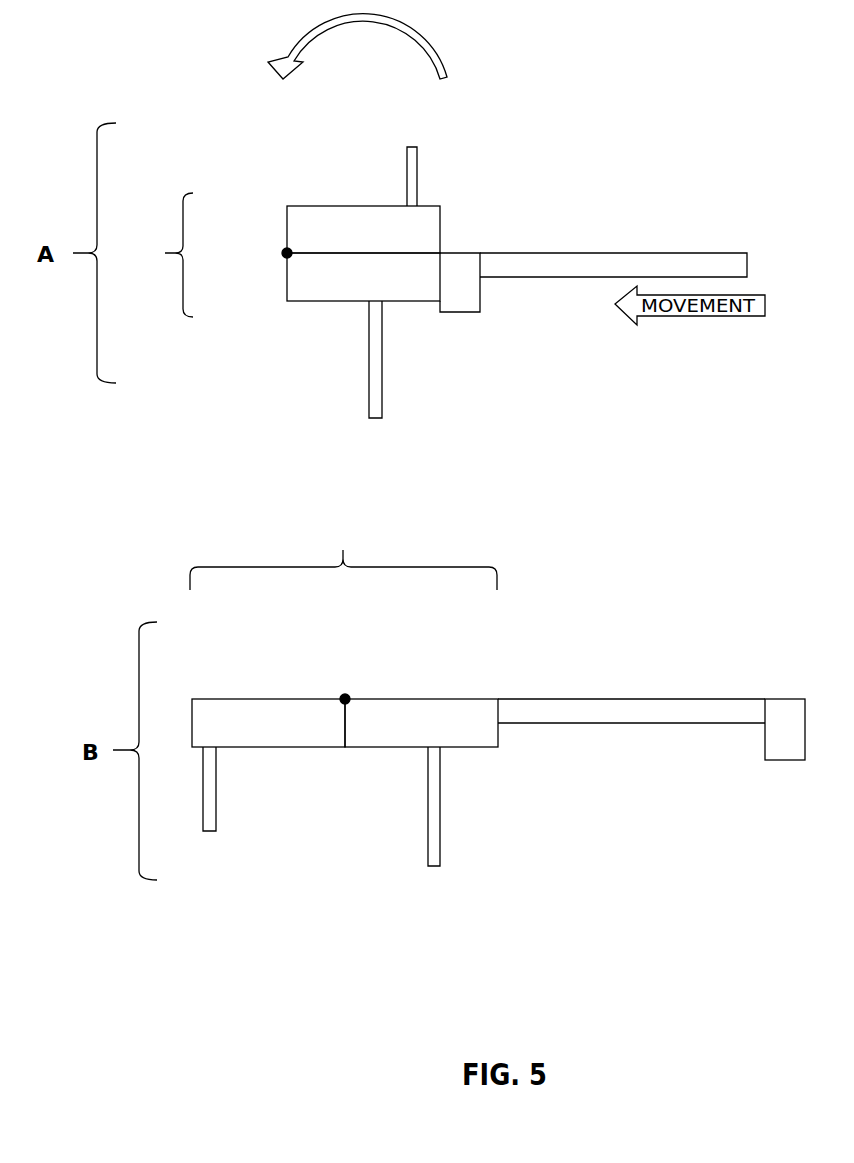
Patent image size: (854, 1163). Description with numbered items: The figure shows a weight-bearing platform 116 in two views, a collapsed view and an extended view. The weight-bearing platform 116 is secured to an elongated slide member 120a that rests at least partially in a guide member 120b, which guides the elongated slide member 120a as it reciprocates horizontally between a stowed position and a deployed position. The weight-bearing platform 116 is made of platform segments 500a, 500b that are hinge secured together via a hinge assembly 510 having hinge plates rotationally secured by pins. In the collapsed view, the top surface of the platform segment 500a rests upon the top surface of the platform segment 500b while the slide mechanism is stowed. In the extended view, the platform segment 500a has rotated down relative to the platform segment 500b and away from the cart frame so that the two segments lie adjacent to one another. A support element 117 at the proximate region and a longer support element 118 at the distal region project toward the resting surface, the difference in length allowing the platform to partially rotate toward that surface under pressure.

The weight-bearing platform 116 is at (343, 550).
The support element 117 is at (407, 148).
The support element 118 is at (382, 375).
The elongated slide member 120a is at (680, 253).
The guide member 120b is at (480, 288).
The platform segment 500a is at (305, 206).
The platform segment 500b is at (300, 301).
The hinge assembly 510 is at (287, 253).